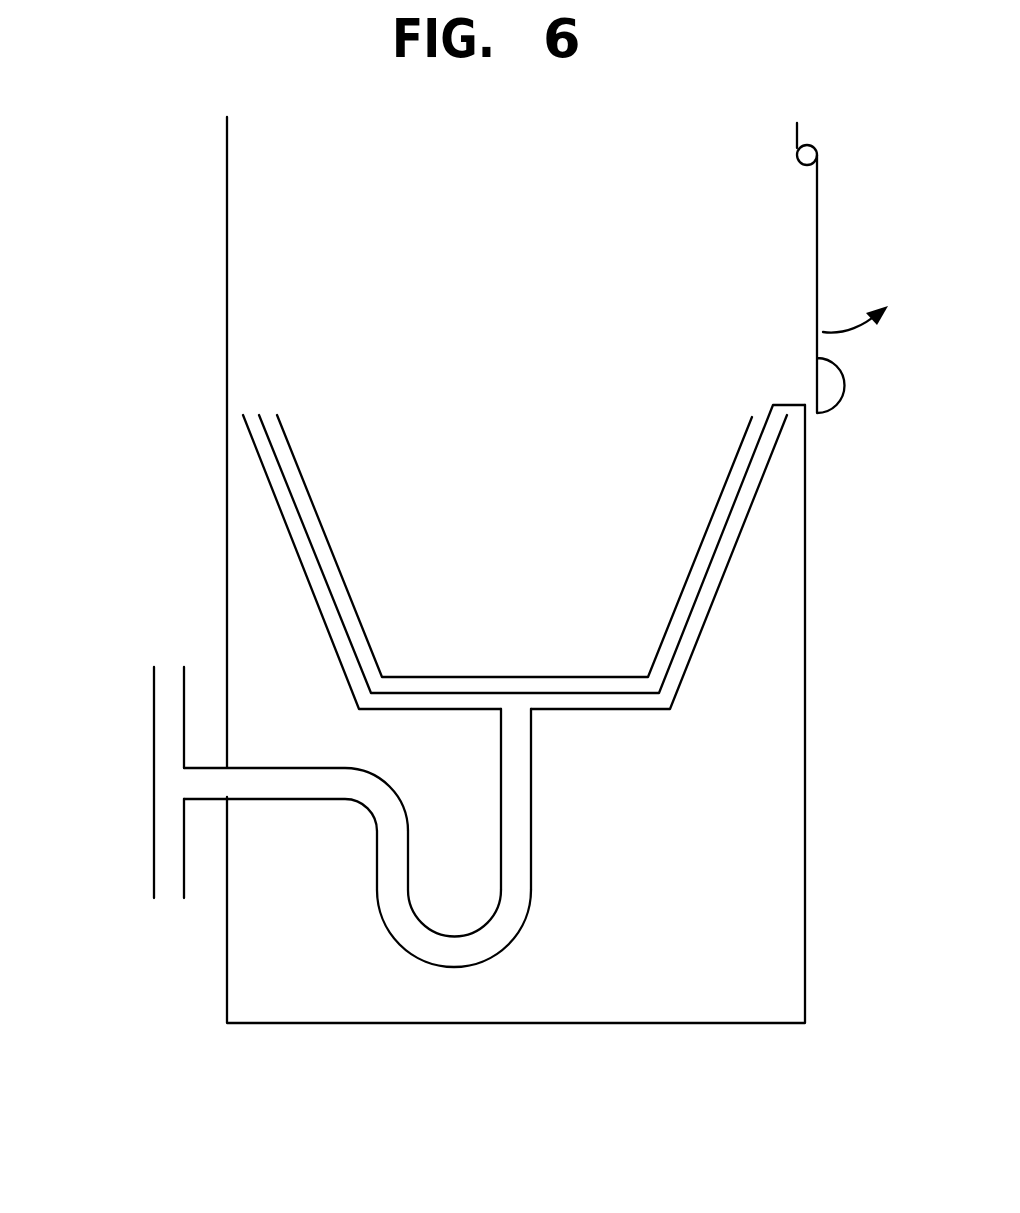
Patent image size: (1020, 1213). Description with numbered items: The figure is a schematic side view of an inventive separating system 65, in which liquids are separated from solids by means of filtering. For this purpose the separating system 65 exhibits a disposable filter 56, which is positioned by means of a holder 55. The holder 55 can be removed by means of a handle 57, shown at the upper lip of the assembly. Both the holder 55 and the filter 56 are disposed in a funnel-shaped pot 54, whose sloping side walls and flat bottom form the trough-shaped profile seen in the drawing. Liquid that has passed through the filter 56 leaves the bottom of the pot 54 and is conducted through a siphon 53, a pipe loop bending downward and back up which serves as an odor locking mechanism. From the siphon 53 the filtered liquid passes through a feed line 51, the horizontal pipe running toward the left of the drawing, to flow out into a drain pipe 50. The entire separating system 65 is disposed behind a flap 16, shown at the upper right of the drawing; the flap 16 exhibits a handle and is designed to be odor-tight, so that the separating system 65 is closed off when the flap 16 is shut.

The flap 16 is at (817, 243).
The drain pipe 50 is at (165, 736).
The feed line 51 is at (283, 783).
The siphon 53 is at (507, 923).
The funnel-shaped pot 54 is at (674, 711).
The holder 55 is at (677, 647).
The disposable filter 56 is at (692, 566).
The handle 57 is at (790, 403).
The separating system 65 is at (812, 725).